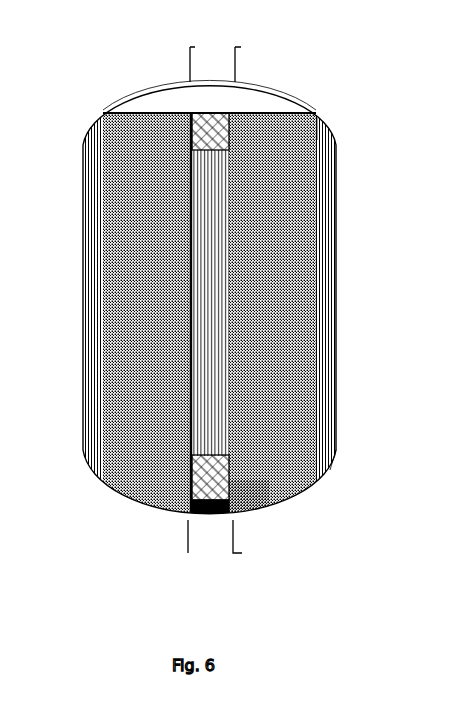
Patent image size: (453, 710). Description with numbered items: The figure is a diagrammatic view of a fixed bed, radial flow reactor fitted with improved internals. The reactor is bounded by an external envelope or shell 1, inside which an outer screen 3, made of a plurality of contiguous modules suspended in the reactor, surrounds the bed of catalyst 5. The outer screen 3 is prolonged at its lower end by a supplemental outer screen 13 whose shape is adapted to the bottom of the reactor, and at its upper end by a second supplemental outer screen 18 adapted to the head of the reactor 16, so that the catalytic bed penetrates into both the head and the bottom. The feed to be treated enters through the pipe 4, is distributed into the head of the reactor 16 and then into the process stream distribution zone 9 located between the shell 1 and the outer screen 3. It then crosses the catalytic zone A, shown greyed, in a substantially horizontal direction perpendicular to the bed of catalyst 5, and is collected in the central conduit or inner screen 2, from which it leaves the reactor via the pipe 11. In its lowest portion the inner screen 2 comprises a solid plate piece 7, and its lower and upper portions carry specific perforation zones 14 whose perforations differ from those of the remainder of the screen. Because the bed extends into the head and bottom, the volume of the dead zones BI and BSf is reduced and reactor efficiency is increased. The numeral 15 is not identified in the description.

The external envelope or shell 1 is at (85, 163).
The inner screen 2 is at (197, 283).
The outer screen 3 is at (103, 270).
The pipe 4 is at (203, 60).
The bed of catalyst 5 is at (123, 325).
The solid plate piece 7 is at (182, 128).
The process stream distribution zone 9 is at (322, 322).
The pipe 11 is at (212, 543).
The supplemental outer screen 13 is at (323, 473).
The specific perforation zones 14 is at (207, 130).
The bottom electrode region 15 is at (247, 517).
The head of the reactor 16 is at (242, 100).
The second supplemental outer screen 18 is at (317, 133).
The catalytic zone A is at (290, 362).
The dead zone BSf is at (274, 104).
The dead zone BI is at (175, 511).